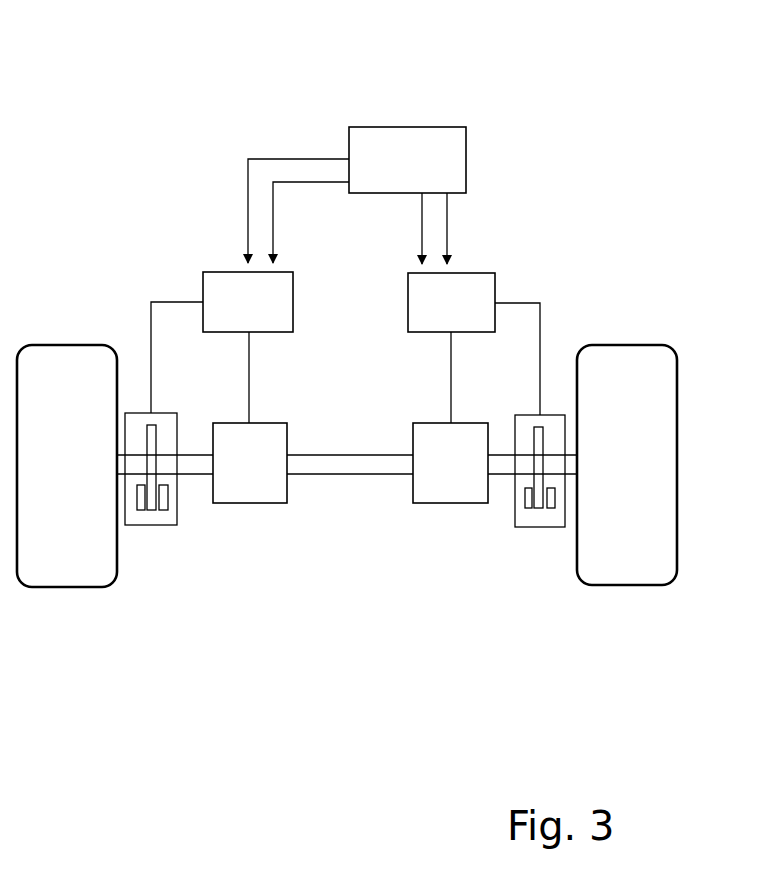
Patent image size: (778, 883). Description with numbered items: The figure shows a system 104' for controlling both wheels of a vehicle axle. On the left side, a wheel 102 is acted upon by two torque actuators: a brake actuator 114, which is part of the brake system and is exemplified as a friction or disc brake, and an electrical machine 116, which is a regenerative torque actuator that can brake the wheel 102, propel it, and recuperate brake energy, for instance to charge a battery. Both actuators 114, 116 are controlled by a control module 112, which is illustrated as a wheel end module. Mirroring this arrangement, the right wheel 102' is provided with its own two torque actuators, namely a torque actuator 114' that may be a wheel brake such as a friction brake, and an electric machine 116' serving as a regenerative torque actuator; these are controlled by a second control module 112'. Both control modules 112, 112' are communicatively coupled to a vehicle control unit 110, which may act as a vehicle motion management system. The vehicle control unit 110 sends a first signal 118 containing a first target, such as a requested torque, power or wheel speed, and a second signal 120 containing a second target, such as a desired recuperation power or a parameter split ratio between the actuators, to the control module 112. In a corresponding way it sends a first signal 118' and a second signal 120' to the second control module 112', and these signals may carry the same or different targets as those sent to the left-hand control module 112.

The system 104' is at (347, 355).
The vehicle control unit 110 is at (454, 140).
The first signal 118 is at (248, 209).
The second signal 120 is at (329, 222).
The first signal 118' is at (375, 239).
The second signal 120' is at (507, 228).
The control module 112 is at (271, 330).
The second control module 112' is at (423, 348).
The electrical machine 116 is at (250, 523).
The electric machine 116' is at (450, 522).
The brake actuator 114 is at (150, 526).
The torque actuator 114' is at (534, 526).
The wheel 102 is at (67, 525).
The right wheel 102' is at (627, 524).